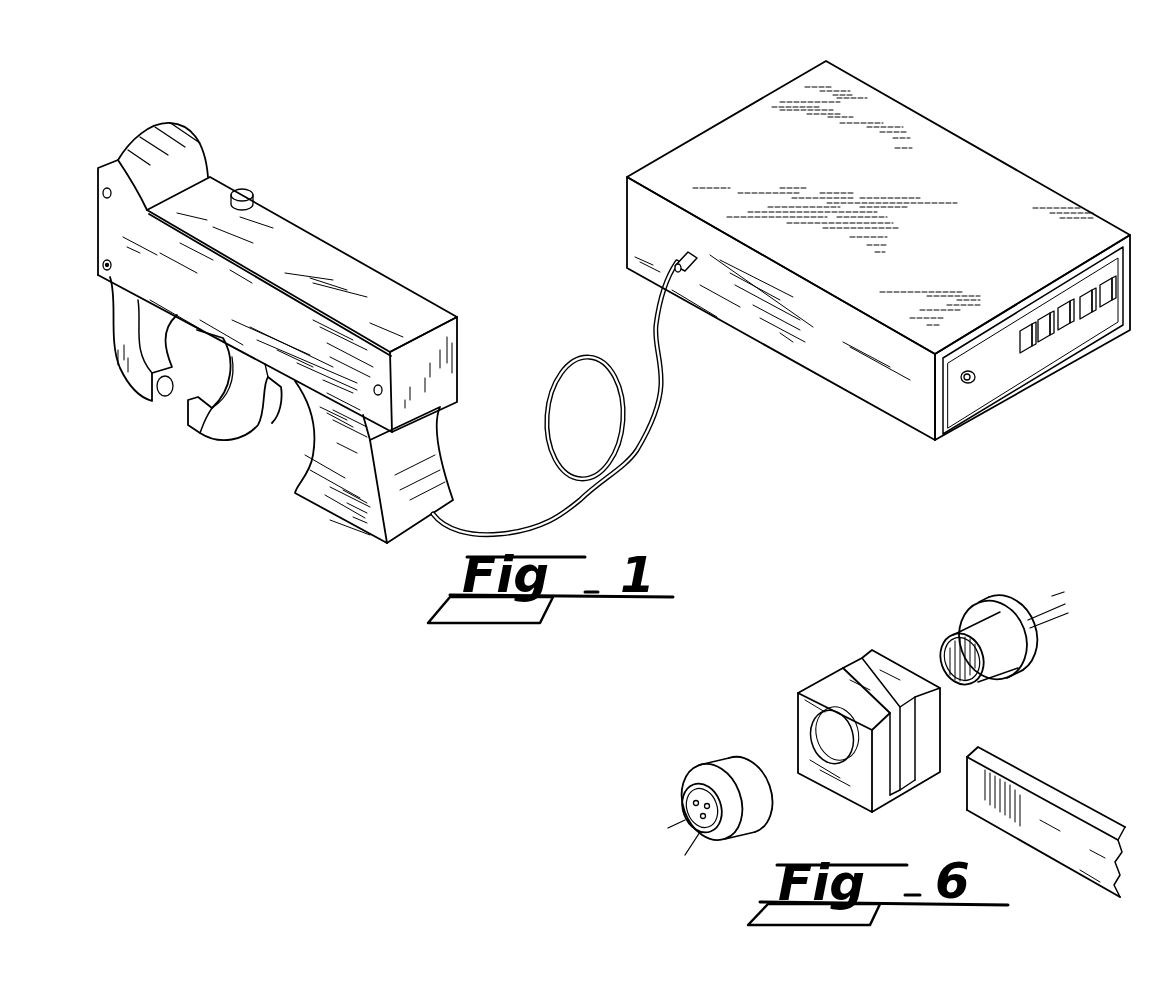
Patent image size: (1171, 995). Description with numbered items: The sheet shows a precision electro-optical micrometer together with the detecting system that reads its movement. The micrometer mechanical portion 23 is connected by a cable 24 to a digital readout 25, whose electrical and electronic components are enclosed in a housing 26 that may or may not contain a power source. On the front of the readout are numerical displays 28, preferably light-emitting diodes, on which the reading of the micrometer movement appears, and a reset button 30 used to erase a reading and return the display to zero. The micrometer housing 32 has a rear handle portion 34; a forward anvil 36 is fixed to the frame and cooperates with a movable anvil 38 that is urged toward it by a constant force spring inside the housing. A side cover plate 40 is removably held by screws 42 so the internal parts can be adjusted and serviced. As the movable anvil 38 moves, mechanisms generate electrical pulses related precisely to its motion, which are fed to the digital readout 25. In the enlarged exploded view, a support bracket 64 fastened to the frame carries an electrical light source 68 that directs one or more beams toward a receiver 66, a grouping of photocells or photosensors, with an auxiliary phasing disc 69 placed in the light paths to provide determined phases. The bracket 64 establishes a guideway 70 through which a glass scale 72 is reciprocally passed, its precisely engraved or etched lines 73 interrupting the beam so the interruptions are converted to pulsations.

In FIG. 1, the micrometer mechanical portion 23 is at (356, 190).
In FIG. 1, the cable 24 is at (654, 421).
In FIG. 1, the digital readout 25 is at (1008, 124).
In FIG. 1, the housing 26 is at (1073, 218).
In FIG. 1, the numerical displays 28 is at (1046, 342).
In FIG. 1, the reset button 30 is at (972, 384).
In FIG. 1, the micrometer housing 32 is at (385, 285).
In FIG. 1, the rear handle portion 34 is at (374, 476).
In FIG. 1, the forward anvil 36 is at (120, 366).
In FIG. 1, the movable anvil 38 is at (203, 433).
In FIG. 1, the side cover plate 40 is at (108, 232).
In FIG. 1, the screws 42 is at (102, 276).
In FIG. 6, the support bracket 64 is at (862, 800).
In FIG. 6, the receiver 66 is at (985, 604).
In FIG. 6, the electrical light source 68 is at (700, 767).
In FIG. 6, the phasing disc 69 is at (940, 642).
In FIG. 6, the guideway 70 is at (841, 684).
In FIG. 6, the glass scale 72 is at (1055, 797).
In FIG. 6, the lines 73 is at (987, 780).